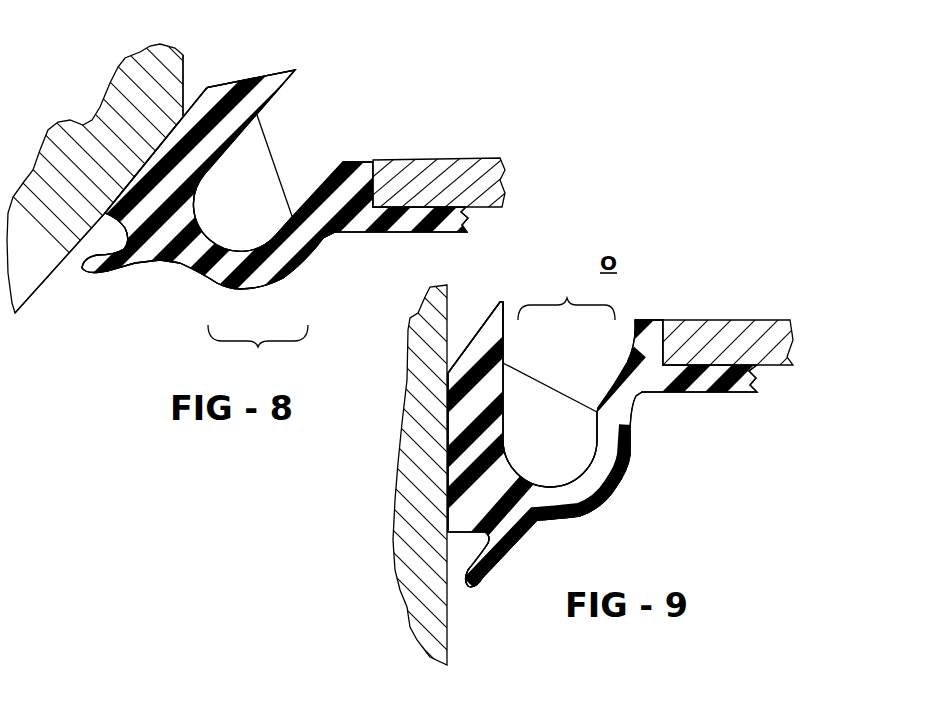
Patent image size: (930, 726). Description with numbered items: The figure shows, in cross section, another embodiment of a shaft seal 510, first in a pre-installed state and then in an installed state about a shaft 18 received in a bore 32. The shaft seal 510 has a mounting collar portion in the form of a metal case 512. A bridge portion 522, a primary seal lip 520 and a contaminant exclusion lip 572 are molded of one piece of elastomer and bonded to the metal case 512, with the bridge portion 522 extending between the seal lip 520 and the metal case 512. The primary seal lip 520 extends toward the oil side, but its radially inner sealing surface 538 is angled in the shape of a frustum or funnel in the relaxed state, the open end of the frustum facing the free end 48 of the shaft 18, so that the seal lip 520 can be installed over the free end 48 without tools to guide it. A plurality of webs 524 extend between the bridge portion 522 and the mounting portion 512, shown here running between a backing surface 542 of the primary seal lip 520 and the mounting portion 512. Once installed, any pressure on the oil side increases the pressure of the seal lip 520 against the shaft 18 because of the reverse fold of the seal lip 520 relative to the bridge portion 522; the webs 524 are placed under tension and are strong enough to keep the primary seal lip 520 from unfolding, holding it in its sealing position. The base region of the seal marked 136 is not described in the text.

In FIG. 8, the shaft 18 is at (127, 80).
In FIG. 9, the shaft 18 is at (402, 512).
In FIG. 8, the bore 32 is at (183, 63).
In FIG. 8, the free end of the shaft 48 is at (38, 288).
In FIG. 8, the seal base portion 136 is at (252, 273).
In FIG. 9, the seal base portion 136 is at (603, 498).
In FIG. 8, the shaft seal 510 is at (316, 100).
In FIG. 9, the shaft seal 510 is at (645, 286).
In FIG. 8, the metal case 512 is at (432, 160).
In FIG. 9, the metal case 512 is at (757, 320).
In FIG. 8, the primary seal lip 520 is at (250, 79).
In FIG. 9, the primary seal lip 520 is at (490, 316).
In FIG. 8, the bridge portion 522 is at (258, 351).
In FIG. 9, the bridge portion 522 is at (566, 297).
In FIG. 8, the webs 524 is at (276, 167).
In FIG. 9, the webs 524 is at (563, 392).
In FIG. 8, the radially inner sealing surface 538 is at (200, 92).
In FIG. 9, the radially inner sealing surface 538 is at (447, 423).
In FIG. 8, the backing surface 542 is at (318, 57).
In FIG. 9, the backing surface 542 is at (503, 345).
In FIG. 8, the contaminant exclusion lip 572 is at (100, 272).
In FIG. 9, the contaminant exclusion lip 572 is at (500, 567).